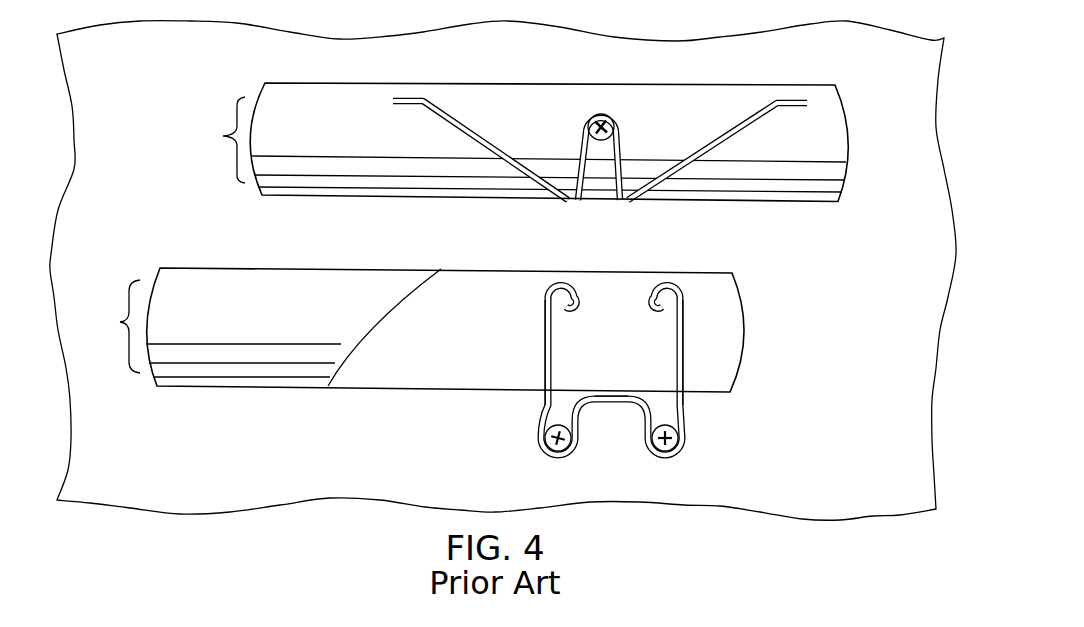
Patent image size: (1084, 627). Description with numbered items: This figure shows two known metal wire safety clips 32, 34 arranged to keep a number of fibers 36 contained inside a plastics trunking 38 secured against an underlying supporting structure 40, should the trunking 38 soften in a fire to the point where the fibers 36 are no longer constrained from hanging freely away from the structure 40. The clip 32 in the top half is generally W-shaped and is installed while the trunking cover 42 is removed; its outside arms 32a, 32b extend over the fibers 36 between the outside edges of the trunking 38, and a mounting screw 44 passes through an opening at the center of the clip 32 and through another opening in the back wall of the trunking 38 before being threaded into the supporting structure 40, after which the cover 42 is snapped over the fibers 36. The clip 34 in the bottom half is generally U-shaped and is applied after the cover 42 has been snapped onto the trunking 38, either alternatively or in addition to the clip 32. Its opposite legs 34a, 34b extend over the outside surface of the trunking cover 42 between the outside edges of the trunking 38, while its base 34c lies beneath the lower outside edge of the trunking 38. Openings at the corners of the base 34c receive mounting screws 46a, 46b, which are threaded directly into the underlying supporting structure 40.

The metal wire clip 32 is at (634, 150).
The outside arm of clip 32a is at (450, 124).
The outside arm of clip 32b is at (733, 137).
The metal wire clip 34 is at (638, 376).
The leg of clip 34a is at (543, 360).
The leg of clip 34b is at (688, 409).
The base of U-shaped clip 34c is at (603, 404).
The fibers 36 is at (467, 237).
The plastics trunking 38 is at (773, 84).
The underlying supporting structure 40 is at (138, 129).
The trunking cover 42 is at (458, 336).
The mounting screw 44 is at (606, 113).
The mounting screw 46a is at (552, 455).
The mounting screw 46b is at (654, 455).